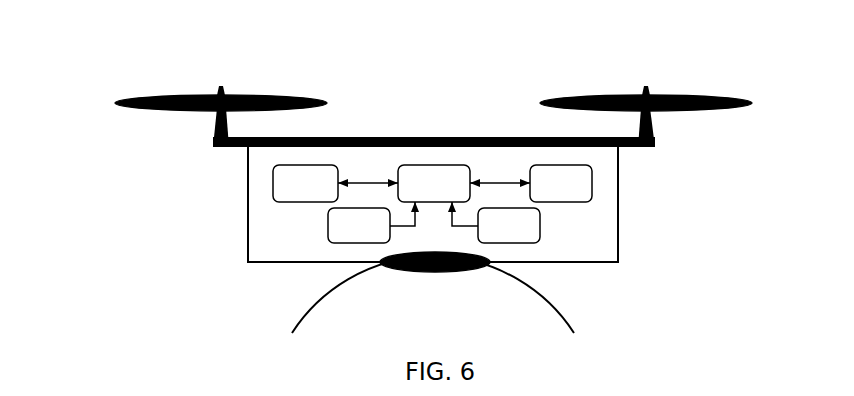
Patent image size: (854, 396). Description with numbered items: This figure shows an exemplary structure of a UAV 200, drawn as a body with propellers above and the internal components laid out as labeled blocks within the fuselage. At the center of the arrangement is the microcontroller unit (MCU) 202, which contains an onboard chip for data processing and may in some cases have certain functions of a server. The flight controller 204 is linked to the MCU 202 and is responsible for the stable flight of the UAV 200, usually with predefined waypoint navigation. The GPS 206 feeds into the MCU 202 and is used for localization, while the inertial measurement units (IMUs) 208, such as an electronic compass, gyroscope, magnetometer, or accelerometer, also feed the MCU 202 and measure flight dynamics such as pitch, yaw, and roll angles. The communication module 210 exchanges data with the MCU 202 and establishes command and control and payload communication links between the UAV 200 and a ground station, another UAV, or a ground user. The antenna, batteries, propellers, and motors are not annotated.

The UAV 200 is at (83, 58).
The microcontroller unit (MCU) 202 is at (434, 183).
The flight controller 204 is at (305, 183).
The GPS 206 is at (359, 225).
The inertial measurement units (IMUs) 208 is at (509, 225).
The communication module 210 is at (561, 183).